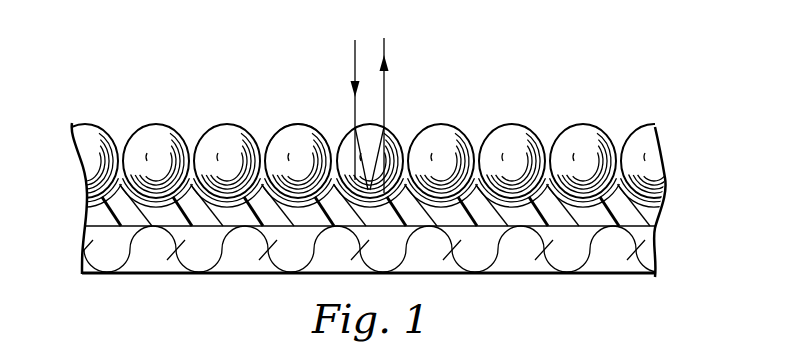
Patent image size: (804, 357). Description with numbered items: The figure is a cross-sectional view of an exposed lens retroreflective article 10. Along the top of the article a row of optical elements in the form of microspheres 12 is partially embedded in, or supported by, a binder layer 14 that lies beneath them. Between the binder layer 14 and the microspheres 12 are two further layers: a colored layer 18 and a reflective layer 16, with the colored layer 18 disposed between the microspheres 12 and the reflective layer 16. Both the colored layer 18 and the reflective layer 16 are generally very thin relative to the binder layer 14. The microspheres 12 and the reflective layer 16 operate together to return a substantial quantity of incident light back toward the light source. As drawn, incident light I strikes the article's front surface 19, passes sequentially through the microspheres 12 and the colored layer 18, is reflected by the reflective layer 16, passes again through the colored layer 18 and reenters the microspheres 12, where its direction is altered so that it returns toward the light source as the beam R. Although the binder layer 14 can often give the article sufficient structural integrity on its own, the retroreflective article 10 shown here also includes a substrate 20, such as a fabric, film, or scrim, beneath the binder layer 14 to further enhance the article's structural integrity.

The exposed lens retroreflective article 10 is at (478, 86).
The microspheres 12 is at (578, 137).
The binder layer 14 is at (643, 218).
The reflective layer 16 is at (662, 212).
The colored layer 18 is at (619, 154).
The front surface 19 is at (292, 113).
The substrate 20 is at (617, 268).
The incident light I is at (355, 60).
The beam R is at (385, 98).